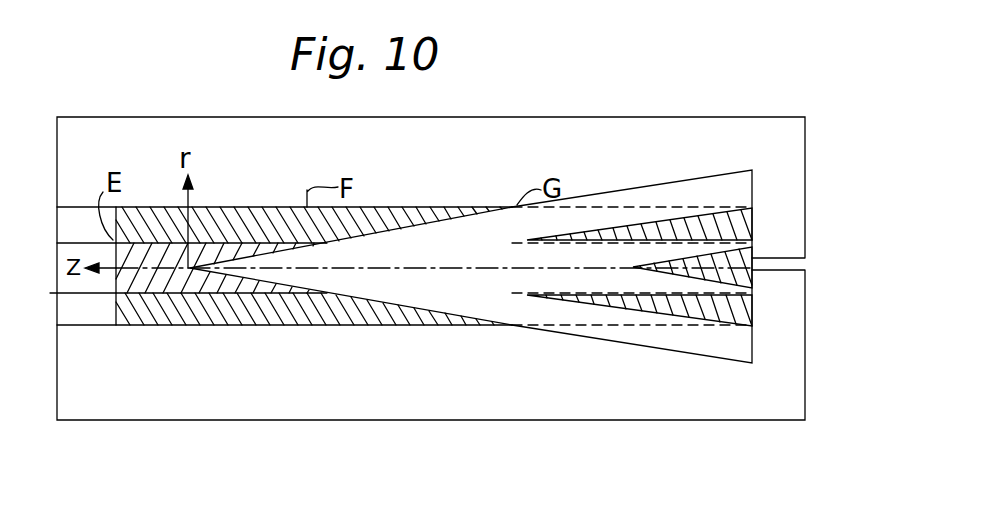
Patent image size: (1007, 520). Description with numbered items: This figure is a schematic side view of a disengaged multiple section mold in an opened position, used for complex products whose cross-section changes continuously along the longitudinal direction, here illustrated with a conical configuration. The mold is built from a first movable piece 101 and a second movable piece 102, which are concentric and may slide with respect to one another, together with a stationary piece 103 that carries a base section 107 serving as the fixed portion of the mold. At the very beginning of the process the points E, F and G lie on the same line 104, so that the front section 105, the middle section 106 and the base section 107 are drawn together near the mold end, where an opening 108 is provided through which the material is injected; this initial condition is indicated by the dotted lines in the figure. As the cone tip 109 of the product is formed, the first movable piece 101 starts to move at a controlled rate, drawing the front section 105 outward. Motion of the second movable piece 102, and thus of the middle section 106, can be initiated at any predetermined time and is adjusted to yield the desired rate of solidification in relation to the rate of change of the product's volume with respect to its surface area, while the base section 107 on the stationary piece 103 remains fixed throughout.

The first movable piece 101 is at (152, 284).
The second movable piece 102 is at (230, 230).
The stationary piece 103 is at (657, 146).
The line 104 is at (512, 490).
The front section 105 is at (307, 490).
The middle section 106 is at (506, 462).
The base section 107 is at (752, 425).
The opening 108 is at (816, 265).
The cone tip 109 is at (699, 284).